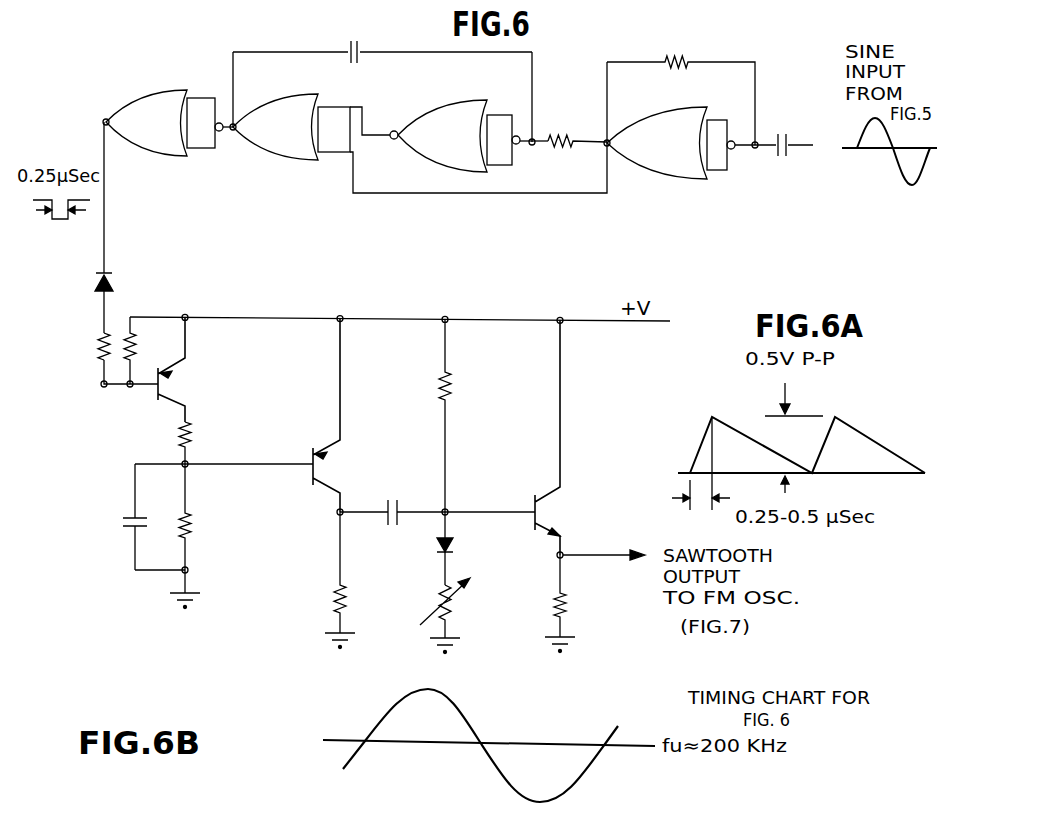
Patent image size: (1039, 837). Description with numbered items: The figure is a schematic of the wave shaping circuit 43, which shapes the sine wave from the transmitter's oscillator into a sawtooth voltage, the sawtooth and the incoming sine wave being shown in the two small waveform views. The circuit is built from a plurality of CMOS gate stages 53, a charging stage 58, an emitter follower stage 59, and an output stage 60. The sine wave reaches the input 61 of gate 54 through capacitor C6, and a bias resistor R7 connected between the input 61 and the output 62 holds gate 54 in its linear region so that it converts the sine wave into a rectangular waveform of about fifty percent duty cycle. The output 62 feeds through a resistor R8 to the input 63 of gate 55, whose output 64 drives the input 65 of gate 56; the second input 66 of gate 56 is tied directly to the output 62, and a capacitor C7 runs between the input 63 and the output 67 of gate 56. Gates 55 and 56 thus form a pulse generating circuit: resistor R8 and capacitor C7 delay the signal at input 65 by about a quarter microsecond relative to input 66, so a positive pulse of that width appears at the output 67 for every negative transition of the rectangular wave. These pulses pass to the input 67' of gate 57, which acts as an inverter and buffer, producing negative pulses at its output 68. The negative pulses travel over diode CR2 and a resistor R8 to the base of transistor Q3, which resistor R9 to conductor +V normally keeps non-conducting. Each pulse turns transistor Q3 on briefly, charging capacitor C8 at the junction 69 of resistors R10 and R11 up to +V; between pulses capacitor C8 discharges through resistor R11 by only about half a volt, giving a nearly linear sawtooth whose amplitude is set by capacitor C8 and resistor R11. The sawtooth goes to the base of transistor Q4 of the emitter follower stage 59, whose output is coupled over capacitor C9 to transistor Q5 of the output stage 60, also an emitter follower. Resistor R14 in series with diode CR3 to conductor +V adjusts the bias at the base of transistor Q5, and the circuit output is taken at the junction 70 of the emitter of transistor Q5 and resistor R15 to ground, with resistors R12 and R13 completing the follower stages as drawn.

In FIG. 6, the output of gate 57 68 is at (105, 118).
In FIG. 6, the input of gate 57 67' is at (213, 98).
In FIG. 6, the output of gate 56 67 is at (230, 157).
In FIG. 6, the NOR gate 57 is at (145, 155).
In FIG. 6, the NOR gate 56 is at (275, 153).
In FIG. 6, the input of gate 56 65 is at (343, 105).
In FIG. 6, the output of gate 55 64 is at (366, 132).
In FIG. 6, the second input of gate 56 66 is at (345, 157).
In FIG. 6, the NOR gate 55 is at (432, 150).
In FIG. 6, the input of gate 55 63 is at (515, 130).
In FIG. 6, the CMOS gate stages 53 is at (496, 208).
In FIG. 6, the output of gate 54 62 is at (606, 138).
In FIG. 6, the NOR gate 54 is at (676, 180).
In FIG. 6, the input of gate 54 61 is at (730, 155).
In FIG. 6B, the input of gate 54 61 is at (465, 745).
In FIG. 6, the capacitor C7 is at (368, 33).
In FIG. 6, the bias resistor R7 is at (696, 45).
In FIG. 6, the resistor R8 is at (580, 135).
In FIG. 6, the capacitor C6 is at (795, 136).
In FIG. 6, the diode CR2 is at (115, 281).
In FIG. 6, the resistor R9 is at (160, 356).
In FIG. 6, the transistor Q3 is at (168, 386).
In FIG. 6, the charging stage 58 is at (292, 397).
In FIG. 6, the resistor R10 is at (192, 445).
In FIG. 6, the junction of resistors R10 and R11 69 is at (183, 459).
In FIG. 6, the capacitor C8 is at (125, 536).
In FIG. 6, the resistor R11 is at (192, 538).
In FIG. 6, the wave shaping circuit 43 is at (249, 644).
In FIG. 6, the transistor Q4 is at (322, 464).
In FIG. 6, the resistor R12 is at (332, 606).
In FIG. 6, the capacitor C9 is at (401, 506).
In FIG. 6, the resistor R13 is at (452, 397).
In FIG. 6, the emitter follower stage 59 is at (424, 417).
In FIG. 6, the diode CR3 is at (468, 548).
In FIG. 6, the resistor R14 is at (436, 596).
In FIG. 6, the transistor Q5 is at (545, 514).
In FIG. 6, the output stage 60 is at (635, 509).
In FIG. 6, the junction of emitter of Q5 and resistor R15 70 is at (556, 559).
In FIG. 6, the resistor R15 is at (590, 606).